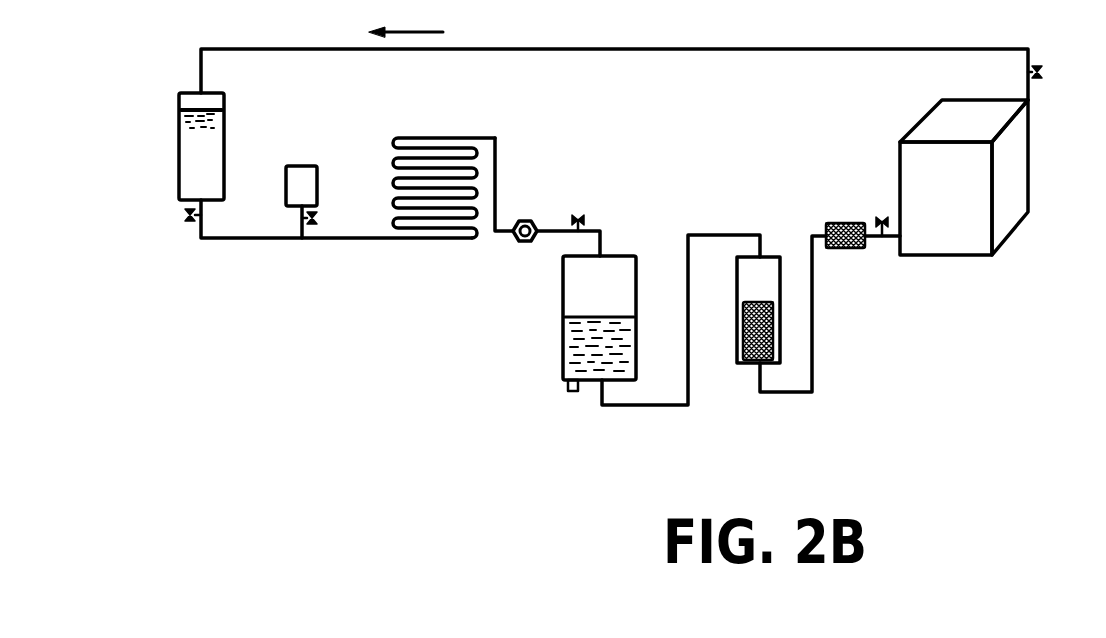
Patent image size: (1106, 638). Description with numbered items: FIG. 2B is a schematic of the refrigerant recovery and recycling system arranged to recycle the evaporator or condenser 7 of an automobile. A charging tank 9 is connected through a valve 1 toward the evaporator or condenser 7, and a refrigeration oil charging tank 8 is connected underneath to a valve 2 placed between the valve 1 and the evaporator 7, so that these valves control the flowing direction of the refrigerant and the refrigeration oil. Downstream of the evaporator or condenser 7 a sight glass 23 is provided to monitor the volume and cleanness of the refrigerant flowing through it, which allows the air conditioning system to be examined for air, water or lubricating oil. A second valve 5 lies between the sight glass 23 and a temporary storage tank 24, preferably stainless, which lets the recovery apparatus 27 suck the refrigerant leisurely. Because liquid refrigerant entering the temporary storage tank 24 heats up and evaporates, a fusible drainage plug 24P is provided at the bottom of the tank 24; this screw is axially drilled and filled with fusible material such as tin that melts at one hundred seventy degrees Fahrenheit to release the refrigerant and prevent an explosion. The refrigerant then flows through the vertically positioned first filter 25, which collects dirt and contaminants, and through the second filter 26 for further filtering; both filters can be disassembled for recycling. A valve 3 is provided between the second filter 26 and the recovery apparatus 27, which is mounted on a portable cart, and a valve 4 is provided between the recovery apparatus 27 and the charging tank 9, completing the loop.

The valve 1 is at (186, 217).
The valve 2 is at (311, 226).
The valve 3 is at (882, 216).
The valve 4 is at (1044, 72).
The second valve 5 is at (578, 215).
The evaporator or condenser 7 is at (440, 137).
The refrigeration oil charging tank 8 is at (302, 166).
The charging tank 9 is at (179, 138).
The sight glass 23 is at (525, 242).
The temporary storage tank 24 is at (563, 325).
The fusible drainage plug 24P is at (573, 392).
The first filter 25 is at (740, 363).
The second filter 26 is at (845, 249).
The recovery apparatus 27 is at (1028, 190).